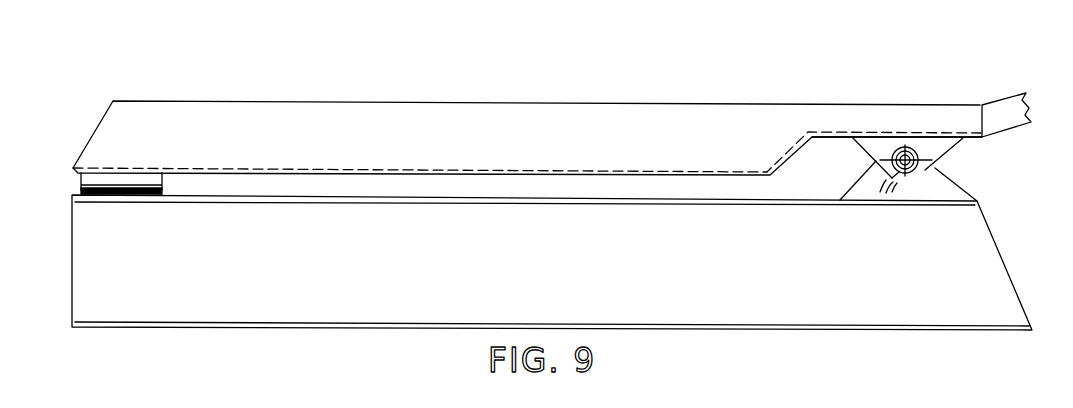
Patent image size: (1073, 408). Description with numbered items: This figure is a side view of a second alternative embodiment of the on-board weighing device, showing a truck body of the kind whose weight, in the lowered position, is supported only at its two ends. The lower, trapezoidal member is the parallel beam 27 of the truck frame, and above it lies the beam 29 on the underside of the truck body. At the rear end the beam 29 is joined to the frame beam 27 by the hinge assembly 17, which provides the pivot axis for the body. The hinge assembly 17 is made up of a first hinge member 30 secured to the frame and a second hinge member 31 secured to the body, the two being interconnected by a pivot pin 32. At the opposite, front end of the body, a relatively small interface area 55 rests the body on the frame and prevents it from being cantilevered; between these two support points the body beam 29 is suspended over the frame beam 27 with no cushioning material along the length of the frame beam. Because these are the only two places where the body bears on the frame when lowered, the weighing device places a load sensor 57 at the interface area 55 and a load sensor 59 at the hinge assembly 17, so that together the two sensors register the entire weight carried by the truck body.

The hinge assembly 17 is at (892, 138).
The parallel beam 27 is at (506, 267).
The beam 29 is at (541, 152).
The first hinge member 30 is at (868, 188).
The second hinge member 31 is at (873, 148).
The pivot pin 32 is at (915, 148).
The interface area 55 is at (106, 178).
The load sensor 57 is at (130, 196).
The load sensor 59 is at (933, 167).